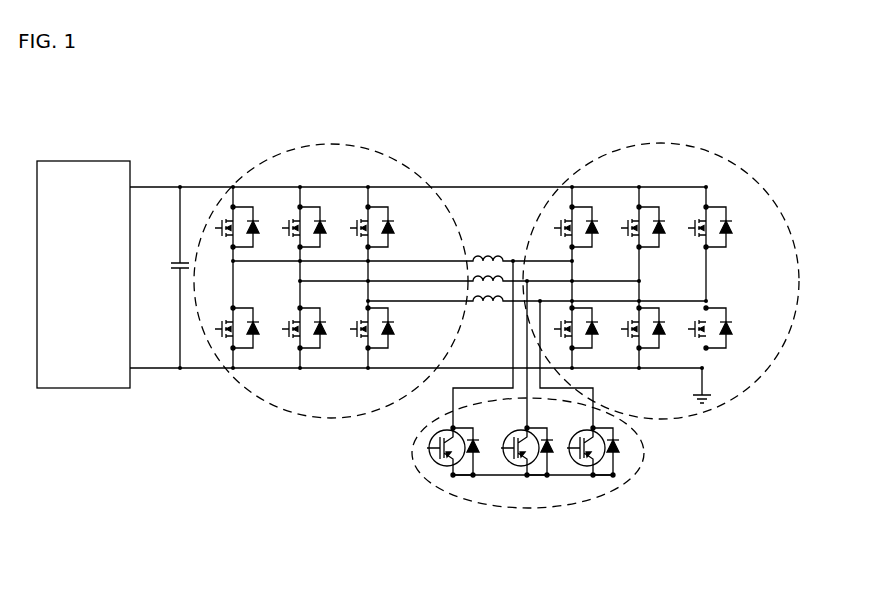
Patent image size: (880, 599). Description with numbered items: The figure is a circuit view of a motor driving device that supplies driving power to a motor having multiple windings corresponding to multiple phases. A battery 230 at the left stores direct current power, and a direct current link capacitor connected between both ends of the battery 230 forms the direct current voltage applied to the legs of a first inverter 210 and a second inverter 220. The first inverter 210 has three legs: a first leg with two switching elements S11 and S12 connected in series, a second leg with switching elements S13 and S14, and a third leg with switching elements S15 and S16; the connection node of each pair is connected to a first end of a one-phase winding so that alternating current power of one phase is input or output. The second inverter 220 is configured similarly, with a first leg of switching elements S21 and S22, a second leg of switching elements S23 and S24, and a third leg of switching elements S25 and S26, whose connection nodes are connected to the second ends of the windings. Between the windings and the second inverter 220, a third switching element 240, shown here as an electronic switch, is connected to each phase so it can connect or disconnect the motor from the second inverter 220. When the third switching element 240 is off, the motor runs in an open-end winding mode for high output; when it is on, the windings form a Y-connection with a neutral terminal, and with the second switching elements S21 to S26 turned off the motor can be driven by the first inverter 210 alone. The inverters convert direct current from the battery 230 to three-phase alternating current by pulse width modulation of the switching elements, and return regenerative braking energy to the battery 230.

The first inverter 210 is at (331, 248).
The second inverter 220 is at (661, 249).
The battery 230 is at (84, 160).
The third switching element 240 is at (528, 508).
The switching element S11 is at (254, 232).
The switching element S12 is at (254, 333).
The switching element S13 is at (321, 232).
The switching element S14 is at (321, 333).
The switching element S15 is at (390, 232).
The switching element S16 is at (390, 333).
The switching element S21 is at (593, 232).
The switching element S22 is at (593, 333).
The switching element S23 is at (660, 232).
The switching element S24 is at (660, 333).
The switching element S25 is at (727, 232).
The switching element S26 is at (727, 333).